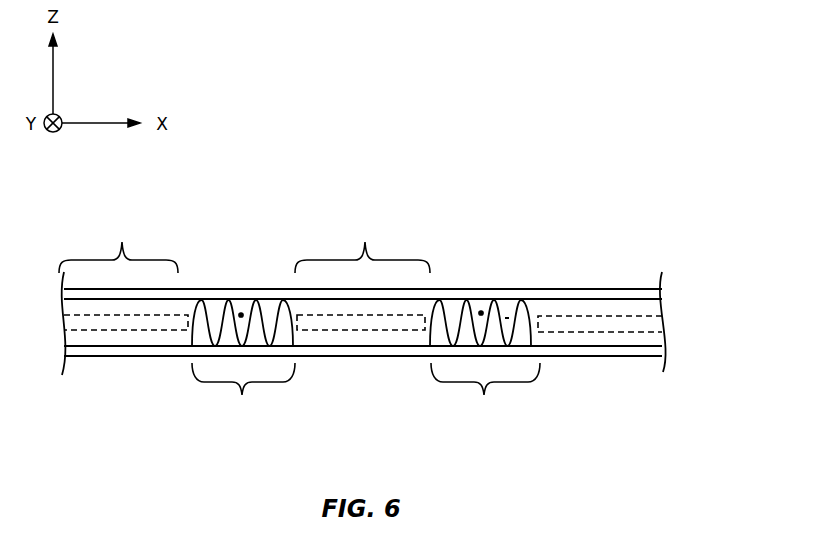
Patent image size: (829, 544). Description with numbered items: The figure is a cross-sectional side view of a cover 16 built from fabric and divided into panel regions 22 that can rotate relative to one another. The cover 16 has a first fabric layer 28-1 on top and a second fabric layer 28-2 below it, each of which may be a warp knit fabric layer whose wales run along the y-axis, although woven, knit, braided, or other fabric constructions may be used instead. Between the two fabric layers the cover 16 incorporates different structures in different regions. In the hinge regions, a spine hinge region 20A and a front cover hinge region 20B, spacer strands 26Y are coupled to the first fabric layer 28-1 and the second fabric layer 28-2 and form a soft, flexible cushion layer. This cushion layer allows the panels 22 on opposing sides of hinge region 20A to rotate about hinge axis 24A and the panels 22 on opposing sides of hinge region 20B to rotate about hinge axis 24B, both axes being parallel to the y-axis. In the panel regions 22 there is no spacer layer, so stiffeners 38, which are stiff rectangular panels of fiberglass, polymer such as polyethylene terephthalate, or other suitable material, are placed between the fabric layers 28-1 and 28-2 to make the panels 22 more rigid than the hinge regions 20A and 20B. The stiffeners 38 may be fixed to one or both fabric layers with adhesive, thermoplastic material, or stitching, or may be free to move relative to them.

The cover 16 is at (528, 118).
The hinge region 20A is at (243, 364).
The hinge region 20B is at (485, 361).
The panel region 22 is at (244, 244).
The hinge axis 24A is at (482, 311).
The hinge axis 24B is at (241, 313).
The spacer strands 26Y is at (247, 299).
The first fabric layer 28-1 is at (448, 297).
The second fabric layer 28-2 is at (382, 357).
The stiffener 38 is at (111, 323).